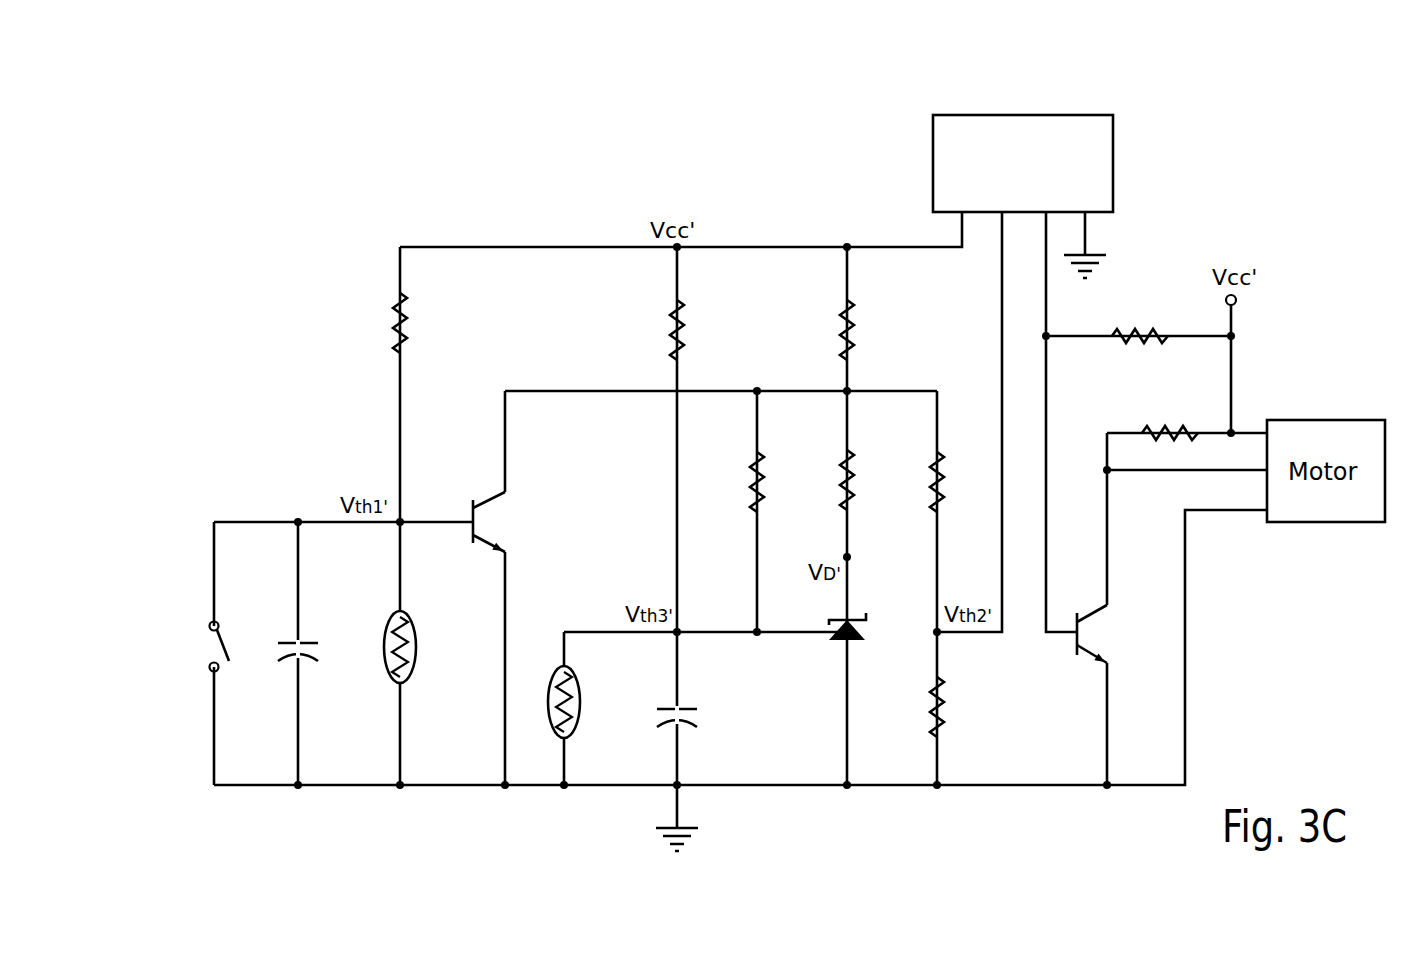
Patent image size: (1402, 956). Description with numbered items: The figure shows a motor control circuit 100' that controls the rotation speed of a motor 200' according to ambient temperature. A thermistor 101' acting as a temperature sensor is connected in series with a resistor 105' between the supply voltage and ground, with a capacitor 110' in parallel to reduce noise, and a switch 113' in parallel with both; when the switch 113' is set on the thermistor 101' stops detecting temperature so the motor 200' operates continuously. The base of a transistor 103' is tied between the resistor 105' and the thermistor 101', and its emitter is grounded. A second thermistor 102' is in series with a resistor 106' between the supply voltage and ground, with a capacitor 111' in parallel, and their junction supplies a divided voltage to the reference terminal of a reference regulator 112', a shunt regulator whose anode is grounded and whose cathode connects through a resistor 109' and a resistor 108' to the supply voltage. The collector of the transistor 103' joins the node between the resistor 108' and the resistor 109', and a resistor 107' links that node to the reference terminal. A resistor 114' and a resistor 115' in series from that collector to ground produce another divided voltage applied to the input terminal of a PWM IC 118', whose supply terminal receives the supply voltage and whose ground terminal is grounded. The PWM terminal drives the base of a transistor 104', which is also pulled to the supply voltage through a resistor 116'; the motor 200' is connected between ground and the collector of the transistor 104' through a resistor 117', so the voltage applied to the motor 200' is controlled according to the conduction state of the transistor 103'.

The motor control circuit 100' is at (275, 197).
The thermistor TR1' 101' is at (438, 626).
The thermistor TR2' 102' is at (572, 755).
The transistor SW1' 103' is at (496, 488).
The transistor SW2' 104' is at (1114, 590).
The resistor R1' 105' is at (372, 341).
The resistor R2' 106' is at (658, 277).
The resistor R3' 107' is at (726, 486).
The resistor R4' 108' is at (829, 277).
The resistor R5' 109' is at (861, 475).
The capacitor C1' 110' is at (315, 696).
The capacitor C2' 111' is at (710, 692).
The reference regulator VR' 112' is at (861, 668).
The switch SW3' 113' is at (202, 652).
The resistor R6' 114' is at (934, 500).
The resistor R7' 115' is at (968, 692).
The resistor R8' 116' is at (1137, 296).
The resistor R9' 117' is at (1168, 396).
The PWM IC 118' is at (1074, 163).
The motor 200' is at (1326, 515).